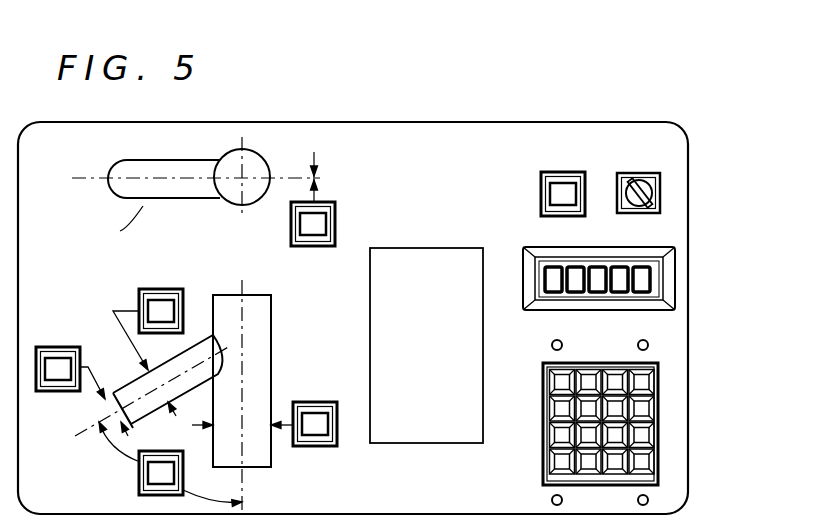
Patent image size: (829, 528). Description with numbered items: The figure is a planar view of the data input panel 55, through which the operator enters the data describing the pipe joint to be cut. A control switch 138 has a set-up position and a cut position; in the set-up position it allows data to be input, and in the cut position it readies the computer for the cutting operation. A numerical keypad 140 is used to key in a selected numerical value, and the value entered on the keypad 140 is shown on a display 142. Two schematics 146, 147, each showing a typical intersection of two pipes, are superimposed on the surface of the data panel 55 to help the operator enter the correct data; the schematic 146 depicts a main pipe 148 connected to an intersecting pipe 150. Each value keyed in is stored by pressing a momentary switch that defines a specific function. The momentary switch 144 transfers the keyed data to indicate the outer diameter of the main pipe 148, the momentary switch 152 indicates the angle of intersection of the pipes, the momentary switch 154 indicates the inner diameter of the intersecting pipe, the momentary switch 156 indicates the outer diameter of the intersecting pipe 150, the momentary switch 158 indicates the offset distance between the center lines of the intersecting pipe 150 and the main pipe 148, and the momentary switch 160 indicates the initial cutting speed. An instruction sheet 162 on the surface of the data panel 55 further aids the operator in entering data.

The data input panel 55 is at (328, 106).
The control switch 138 is at (636, 214).
The numerical keypad 140 is at (548, 464).
The display 142 is at (553, 308).
The momentary switch 144 is at (313, 403).
The schematic 146 is at (222, 292).
The schematic 147 is at (143, 206).
The main pipe 148 is at (265, 153).
The intersecting pipe 150 is at (150, 163).
The momentary switch 152 is at (140, 479).
The momentary switch 154 is at (52, 348).
The momentary switch 156 is at (156, 289).
The momentary switch 158 is at (327, 222).
The momentary switch 160 is at (543, 189).
The instruction sheet 162 is at (447, 249).